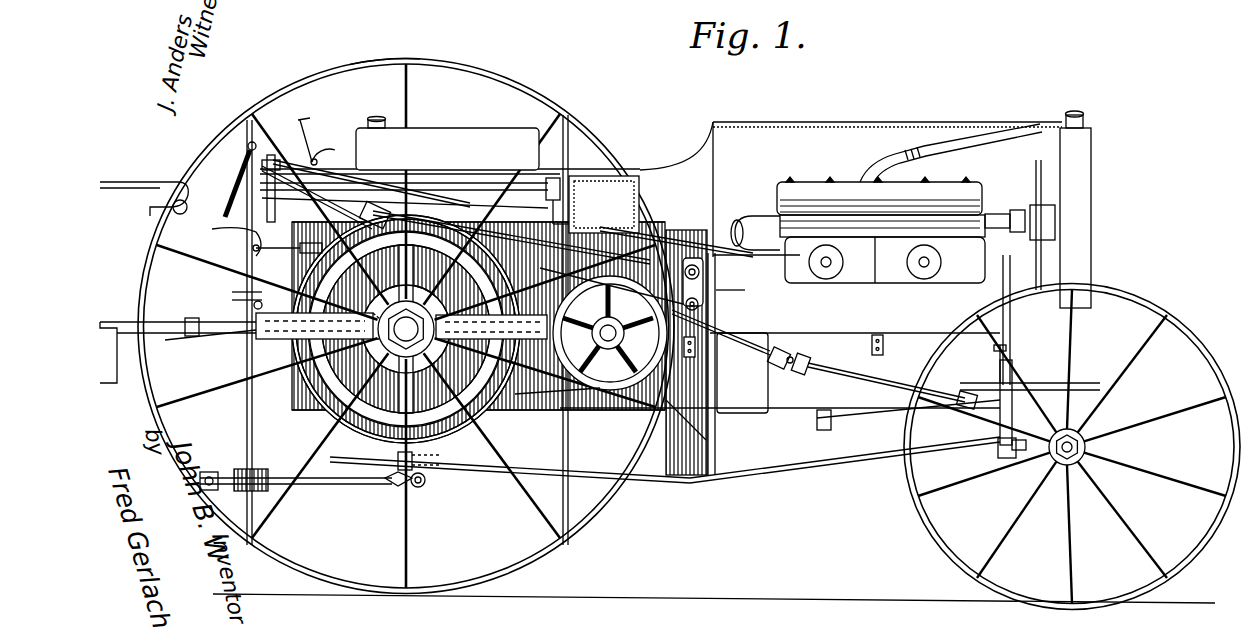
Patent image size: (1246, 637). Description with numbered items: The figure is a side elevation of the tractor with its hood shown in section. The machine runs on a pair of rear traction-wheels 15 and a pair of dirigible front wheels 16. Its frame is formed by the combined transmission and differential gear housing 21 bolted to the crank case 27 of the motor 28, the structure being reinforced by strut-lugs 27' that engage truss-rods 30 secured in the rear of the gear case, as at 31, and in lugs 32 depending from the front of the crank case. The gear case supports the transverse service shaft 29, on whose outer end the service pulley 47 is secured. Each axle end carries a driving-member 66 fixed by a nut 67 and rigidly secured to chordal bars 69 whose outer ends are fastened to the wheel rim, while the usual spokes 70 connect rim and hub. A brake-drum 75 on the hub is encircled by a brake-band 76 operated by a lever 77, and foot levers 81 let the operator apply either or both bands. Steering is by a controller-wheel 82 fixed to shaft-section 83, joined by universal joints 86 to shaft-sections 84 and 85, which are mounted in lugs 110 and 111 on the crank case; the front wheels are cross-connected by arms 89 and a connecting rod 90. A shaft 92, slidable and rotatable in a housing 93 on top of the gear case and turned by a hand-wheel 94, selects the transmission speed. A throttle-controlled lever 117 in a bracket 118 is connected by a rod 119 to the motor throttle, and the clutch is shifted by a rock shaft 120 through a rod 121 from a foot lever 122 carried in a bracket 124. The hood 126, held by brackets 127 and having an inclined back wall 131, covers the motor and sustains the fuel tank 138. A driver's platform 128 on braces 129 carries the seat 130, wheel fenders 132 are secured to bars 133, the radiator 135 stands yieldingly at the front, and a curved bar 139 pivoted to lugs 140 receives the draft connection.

The rear traction-wheel 15 is at (461, 62).
The wheel fender 132 is at (380, 60).
The dirigible front wheel 16 is at (1152, 310).
The combined transmission and differential gear housing 21 is at (541, 410).
The crank case 27 is at (855, 387).
The strut-lug 27' is at (728, 381).
The motor 28 is at (893, 254).
The service shaft (transverse drive-shaft) 29 is at (717, 298).
The truss-rod 30 is at (830, 462).
The truss-rod securing point 31 is at (396, 460).
The lug 32 is at (1005, 455).
The service pulley 47 is at (640, 393).
The driving-member (drive plate) 66 is at (491, 327).
The nut 67 is at (440, 312).
The chordal bar 69 is at (245, 428).
The spoke 70 is at (411, 106).
The brake-drum 75 is at (458, 346).
The brake-band 76 is at (330, 396).
The lever 77 is at (318, 326).
The foot lever 81 is at (228, 290).
The controller-wheel 82 is at (235, 186).
The shaft-section 83 is at (552, 244).
The shaft-section 84 is at (851, 378).
The shaft-section 85 is at (968, 422).
The universal joint 86 is at (782, 350).
The arm 89 is at (1050, 462).
The connecting rod 90 is at (1010, 460).
The shaft 92 is at (456, 183).
The housing 93 is at (604, 204).
The hand-wheel 94 is at (262, 165).
The lug 110 is at (803, 372).
The lug 111 is at (960, 383).
The throttle-controlled lever 117 is at (298, 126).
The bracket 118 is at (330, 208).
The rod 119 is at (390, 198).
The rock shaft 120 is at (692, 262).
The rod 121 is at (470, 230).
The foot lever 122 is at (238, 252).
The bracket 124 is at (214, 230).
The hood 126 is at (795, 124).
The bracket 127 is at (700, 338).
The driver's platform 128 is at (185, 334).
The brace 129 is at (225, 348).
The driver's seat 130 is at (140, 182).
The inclined back wall 131 is at (330, 185).
The bar 133 is at (690, 418).
The radiator 135 is at (1088, 200).
The fuel tank 138 is at (455, 132).
The curved bar 139 is at (331, 486).
The lug 140 is at (424, 486).